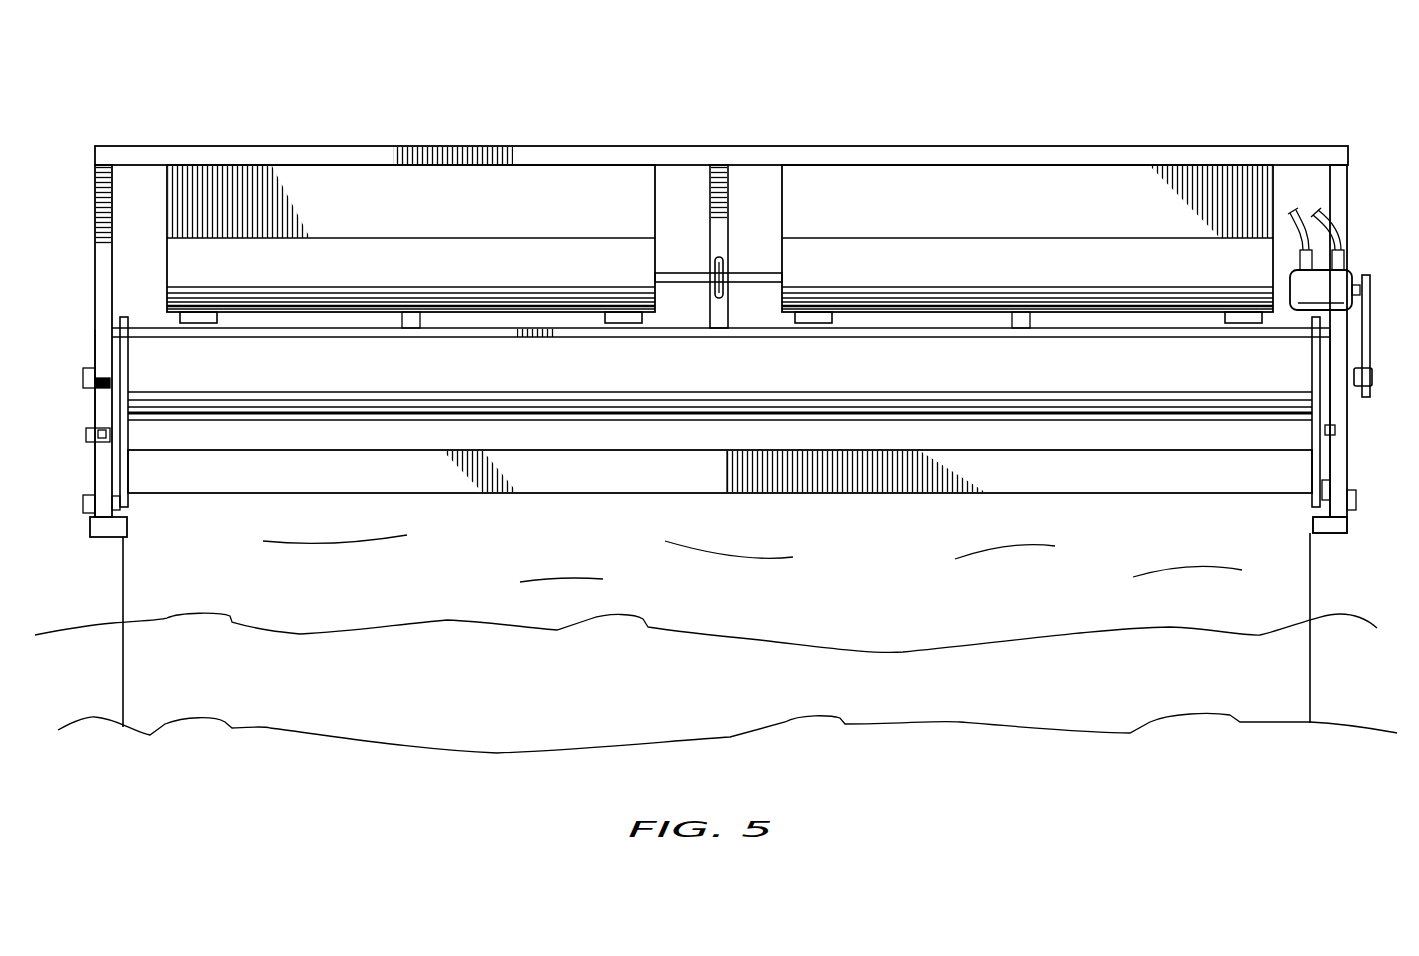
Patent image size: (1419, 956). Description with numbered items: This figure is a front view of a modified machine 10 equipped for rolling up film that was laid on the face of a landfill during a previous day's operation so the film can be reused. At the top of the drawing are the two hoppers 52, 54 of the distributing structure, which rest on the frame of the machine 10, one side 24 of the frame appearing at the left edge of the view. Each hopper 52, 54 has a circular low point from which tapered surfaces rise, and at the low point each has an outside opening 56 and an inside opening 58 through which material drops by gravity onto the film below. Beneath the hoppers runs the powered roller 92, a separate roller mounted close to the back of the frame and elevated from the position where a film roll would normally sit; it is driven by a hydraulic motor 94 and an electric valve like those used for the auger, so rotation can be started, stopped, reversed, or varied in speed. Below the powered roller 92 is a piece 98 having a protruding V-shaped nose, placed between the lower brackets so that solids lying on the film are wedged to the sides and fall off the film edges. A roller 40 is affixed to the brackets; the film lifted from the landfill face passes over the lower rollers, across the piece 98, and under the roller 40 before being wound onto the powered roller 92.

The machine 10 is at (722, 104).
The side 24 is at (95, 318).
The roller 40 is at (1314, 510).
The hopper 52 is at (316, 186).
The hopper 54 is at (857, 186).
The outside opening 56 is at (195, 326).
The inside opening 58 is at (628, 326).
The powered roller 92 is at (709, 381).
The hydraulic motor 94 is at (1337, 288).
The piece 98 is at (594, 494).